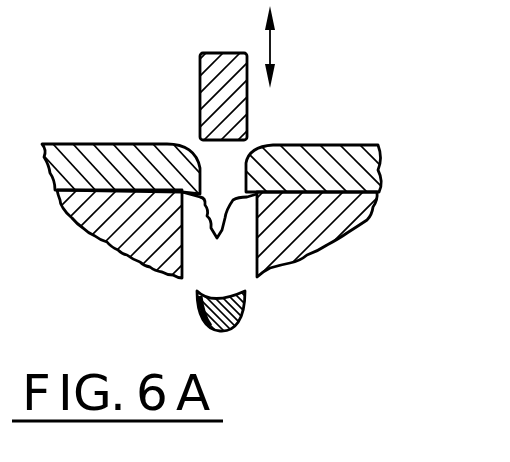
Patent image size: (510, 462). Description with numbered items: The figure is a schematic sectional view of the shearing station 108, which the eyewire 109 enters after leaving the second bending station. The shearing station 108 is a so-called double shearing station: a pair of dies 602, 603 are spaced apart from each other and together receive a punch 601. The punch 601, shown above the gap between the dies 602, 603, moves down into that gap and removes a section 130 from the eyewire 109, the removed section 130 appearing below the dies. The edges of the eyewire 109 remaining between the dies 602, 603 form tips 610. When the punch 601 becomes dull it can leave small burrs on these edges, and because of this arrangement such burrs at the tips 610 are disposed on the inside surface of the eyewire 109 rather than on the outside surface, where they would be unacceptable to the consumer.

The eyewire 109 is at (118, 124).
The punch 601 is at (200, 70).
The die 602 is at (123, 248).
The die 603 is at (342, 222).
The tips 610 is at (219, 232).
The section 130 is at (197, 313).
The shearing station 108 is at (298, 100).